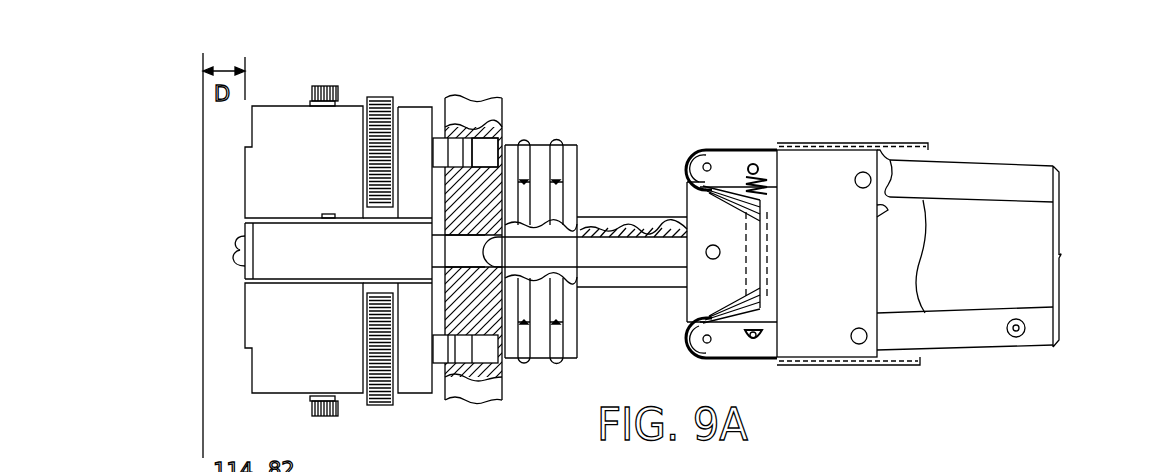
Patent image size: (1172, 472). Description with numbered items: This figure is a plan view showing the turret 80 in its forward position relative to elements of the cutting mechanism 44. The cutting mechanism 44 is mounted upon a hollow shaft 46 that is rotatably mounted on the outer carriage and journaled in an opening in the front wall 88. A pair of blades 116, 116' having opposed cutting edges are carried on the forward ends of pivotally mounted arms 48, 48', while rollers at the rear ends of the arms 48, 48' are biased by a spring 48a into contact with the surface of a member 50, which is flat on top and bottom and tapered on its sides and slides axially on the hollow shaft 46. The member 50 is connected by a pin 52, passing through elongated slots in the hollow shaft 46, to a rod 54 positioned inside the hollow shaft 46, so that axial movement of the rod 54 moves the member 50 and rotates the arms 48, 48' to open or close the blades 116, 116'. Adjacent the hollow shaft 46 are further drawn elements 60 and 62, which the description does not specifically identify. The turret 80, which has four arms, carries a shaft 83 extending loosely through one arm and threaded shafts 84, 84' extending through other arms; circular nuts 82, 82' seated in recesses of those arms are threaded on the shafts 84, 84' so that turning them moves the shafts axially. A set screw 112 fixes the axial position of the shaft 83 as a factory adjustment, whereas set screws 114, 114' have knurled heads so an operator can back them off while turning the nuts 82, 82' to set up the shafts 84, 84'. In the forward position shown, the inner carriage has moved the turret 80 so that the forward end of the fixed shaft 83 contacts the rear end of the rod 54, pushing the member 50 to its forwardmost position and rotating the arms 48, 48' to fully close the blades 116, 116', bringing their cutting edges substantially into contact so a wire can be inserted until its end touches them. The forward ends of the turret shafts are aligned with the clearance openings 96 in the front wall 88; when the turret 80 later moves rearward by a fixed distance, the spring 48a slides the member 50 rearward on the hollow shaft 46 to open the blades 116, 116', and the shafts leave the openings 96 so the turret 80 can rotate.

The cutting mechanism 44 is at (858, 377).
The hollow shaft 46 is at (610, 222).
The arm 48 is at (915, 233).
The arm 48' is at (965, 364).
The spring 48a is at (745, 188).
The member 50 is at (682, 204).
The pin 52 is at (713, 245).
The rod 54 is at (655, 252).
The upper spring assembly 60 is at (557, 140).
The lower spring assembly 62 is at (540, 350).
The turret 80 is at (266, 316).
The circular nut 82 is at (401, 118).
The circular nut 82' is at (404, 370).
The shaft 83 is at (445, 252).
The threaded shaft 84 is at (450, 142).
The threaded shaft 84' is at (465, 390).
The front wall 88 is at (466, 115).
The openings 96 is at (481, 155).
The set screw 112 is at (326, 214).
The set screw 114 is at (297, 76).
The set screw 114' is at (354, 428).
The blade 116 is at (1093, 210).
The blade 116' is at (1098, 300).